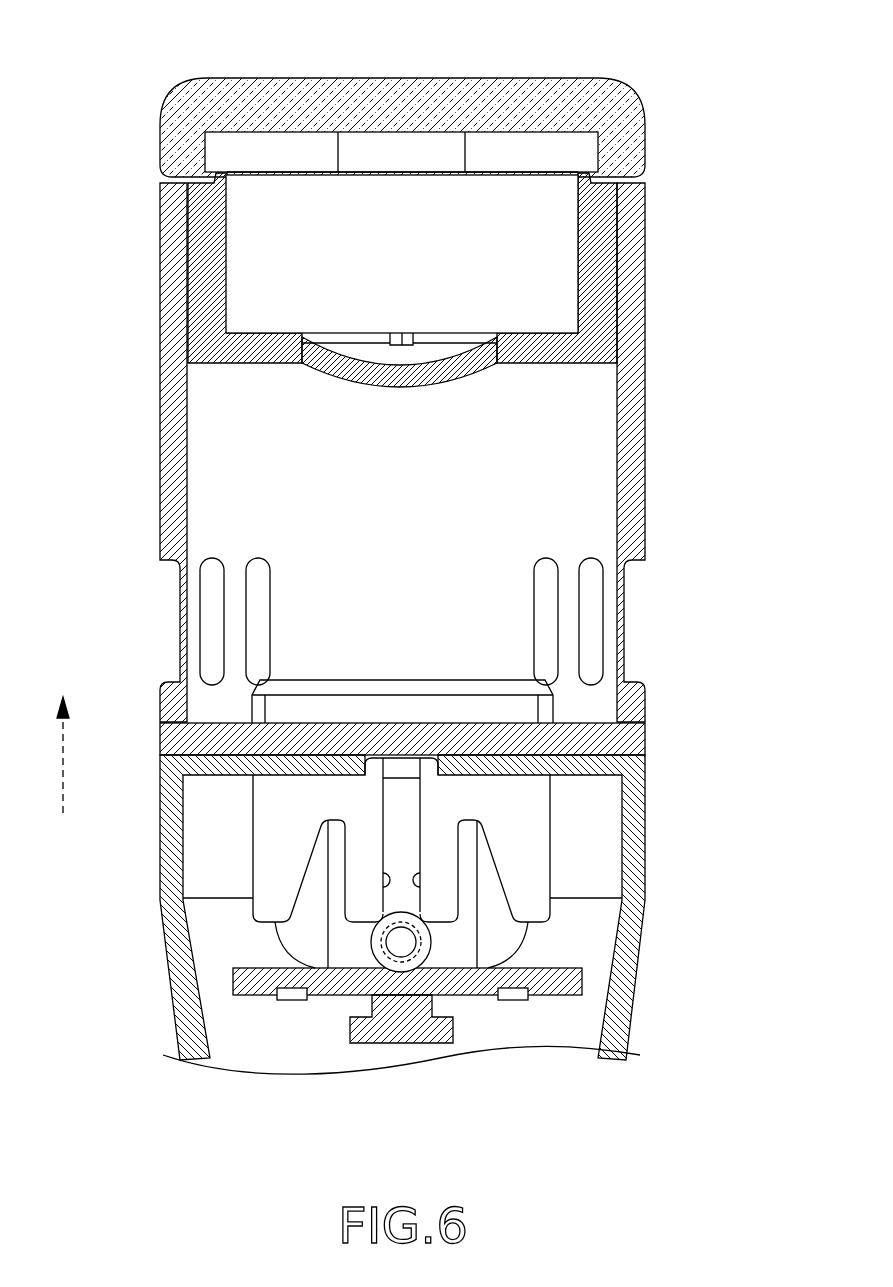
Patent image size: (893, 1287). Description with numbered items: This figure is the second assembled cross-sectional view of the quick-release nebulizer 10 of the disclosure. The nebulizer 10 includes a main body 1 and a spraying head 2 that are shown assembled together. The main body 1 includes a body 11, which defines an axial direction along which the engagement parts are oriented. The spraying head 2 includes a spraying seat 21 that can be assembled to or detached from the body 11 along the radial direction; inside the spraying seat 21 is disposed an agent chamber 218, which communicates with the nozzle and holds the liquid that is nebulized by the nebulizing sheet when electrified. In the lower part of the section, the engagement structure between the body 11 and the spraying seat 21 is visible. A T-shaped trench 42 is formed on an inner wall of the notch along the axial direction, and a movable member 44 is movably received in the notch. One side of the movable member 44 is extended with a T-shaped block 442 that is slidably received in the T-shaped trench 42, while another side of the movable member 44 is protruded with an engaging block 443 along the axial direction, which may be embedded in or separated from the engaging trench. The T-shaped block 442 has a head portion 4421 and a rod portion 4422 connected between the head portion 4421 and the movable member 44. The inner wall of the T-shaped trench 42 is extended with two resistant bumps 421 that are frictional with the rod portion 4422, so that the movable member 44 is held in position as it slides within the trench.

The nebulizer 10 is at (402, 592).
The main body 1 is at (456, 914).
The body 11 is at (633, 930).
The spraying head 2 is at (650, 440).
The spraying seat 21 is at (636, 393).
The agent chamber 218 is at (548, 243).
The T-shaped trench 42 is at (403, 773).
The resistant bumps 421 is at (384, 878).
The engaging block 443 is at (400, 790).
The movable member 44 is at (272, 940).
The T-shaped block 442 is at (407, 1046).
The head portion 4421 is at (383, 957).
The rod portion 4422 is at (401, 962).